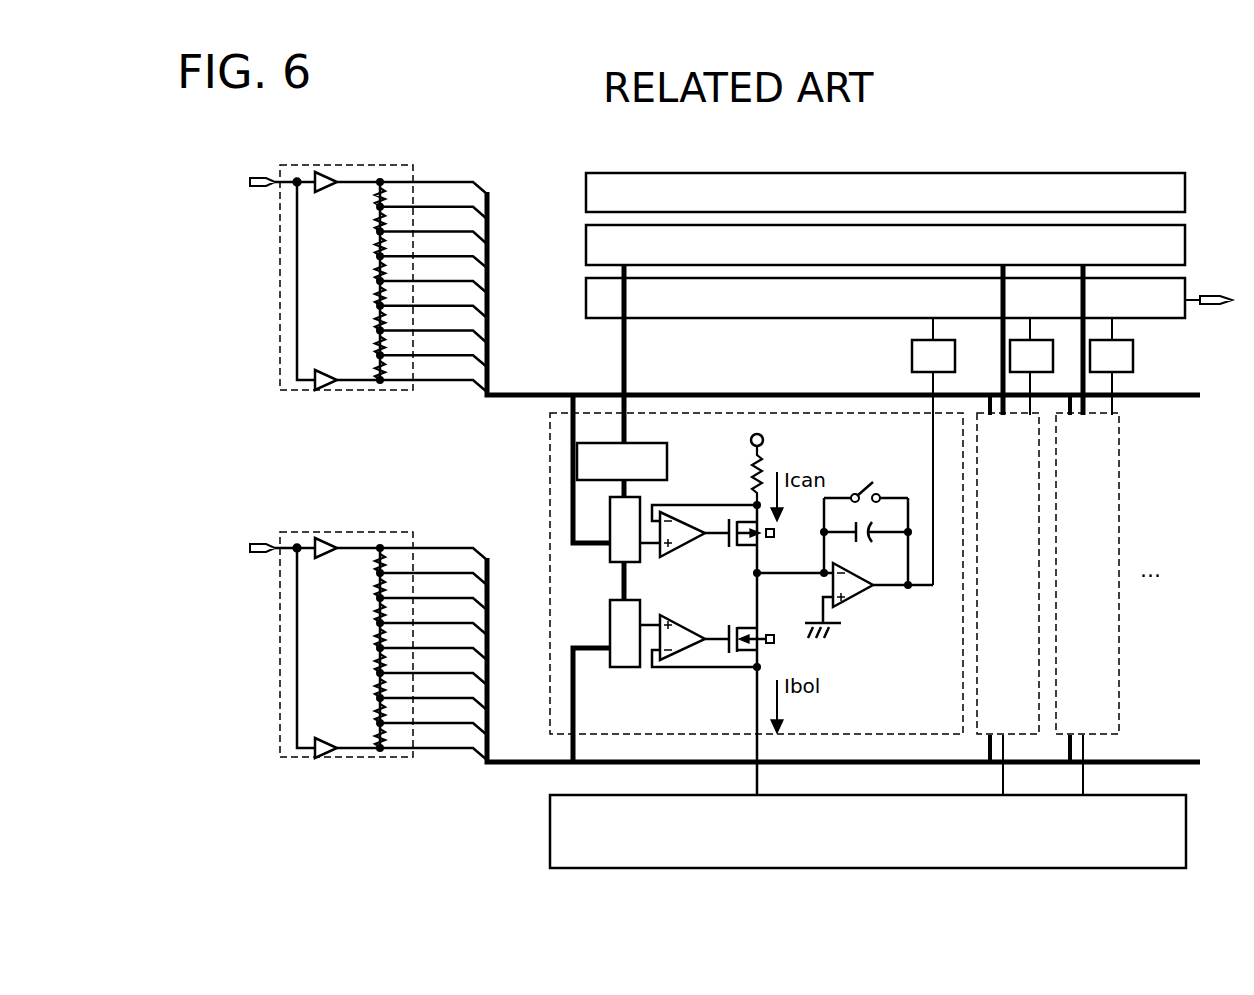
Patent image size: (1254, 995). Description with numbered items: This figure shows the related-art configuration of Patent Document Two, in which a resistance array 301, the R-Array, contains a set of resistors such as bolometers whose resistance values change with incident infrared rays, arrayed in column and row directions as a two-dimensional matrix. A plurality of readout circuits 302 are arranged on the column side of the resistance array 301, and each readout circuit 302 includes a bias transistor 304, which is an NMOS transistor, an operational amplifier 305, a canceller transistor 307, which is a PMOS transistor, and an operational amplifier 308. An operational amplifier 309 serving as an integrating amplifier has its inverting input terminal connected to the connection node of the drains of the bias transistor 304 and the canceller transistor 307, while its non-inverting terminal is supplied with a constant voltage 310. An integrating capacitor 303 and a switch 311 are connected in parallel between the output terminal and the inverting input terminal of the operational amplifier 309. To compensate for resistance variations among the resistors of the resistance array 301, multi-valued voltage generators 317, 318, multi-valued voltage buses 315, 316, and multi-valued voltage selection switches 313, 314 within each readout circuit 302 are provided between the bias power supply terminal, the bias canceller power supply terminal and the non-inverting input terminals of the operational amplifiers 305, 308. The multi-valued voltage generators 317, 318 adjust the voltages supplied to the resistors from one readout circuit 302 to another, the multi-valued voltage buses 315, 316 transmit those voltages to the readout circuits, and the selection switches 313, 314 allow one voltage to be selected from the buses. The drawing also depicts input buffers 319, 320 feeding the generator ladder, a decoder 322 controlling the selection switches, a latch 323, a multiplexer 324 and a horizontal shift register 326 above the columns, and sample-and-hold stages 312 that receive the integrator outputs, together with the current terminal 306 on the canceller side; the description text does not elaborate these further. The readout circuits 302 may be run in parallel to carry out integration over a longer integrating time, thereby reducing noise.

The resistance array 301 is at (550, 832).
The readout circuit 302 is at (550, 470).
The integrating capacitor 303 is at (877, 540).
The bias transistor 304 is at (775, 633).
The operational amplifier 305 is at (688, 614).
The constant current terminal 306 is at (766, 462).
The canceller transistor 307 is at (762, 540).
The operational amplifier 308 is at (688, 557).
The operational amplifier 309 is at (858, 598).
The constant voltage 310 is at (835, 628).
The switch 311 is at (866, 476).
The sample and hold circuit 312 is at (912, 352).
The multi-valued voltage selection switch 313 is at (610, 630).
The multi-valued voltage selection switch 314 is at (610, 505).
The multi-valued voltage bus 315 is at (492, 765).
The multi-valued voltage bus 316 is at (492, 398).
The multi-valued voltage generator 317 is at (368, 628).
The multi-valued voltage generator 318 is at (416, 170).
The buffer amplifier 319 is at (328, 538).
The buffer amplifier 320 is at (318, 738).
The decoder 322 is at (667, 461).
The latch 323 is at (586, 251).
The multiplexer 324 is at (586, 294).
The horizontal shift register 326 is at (586, 198).